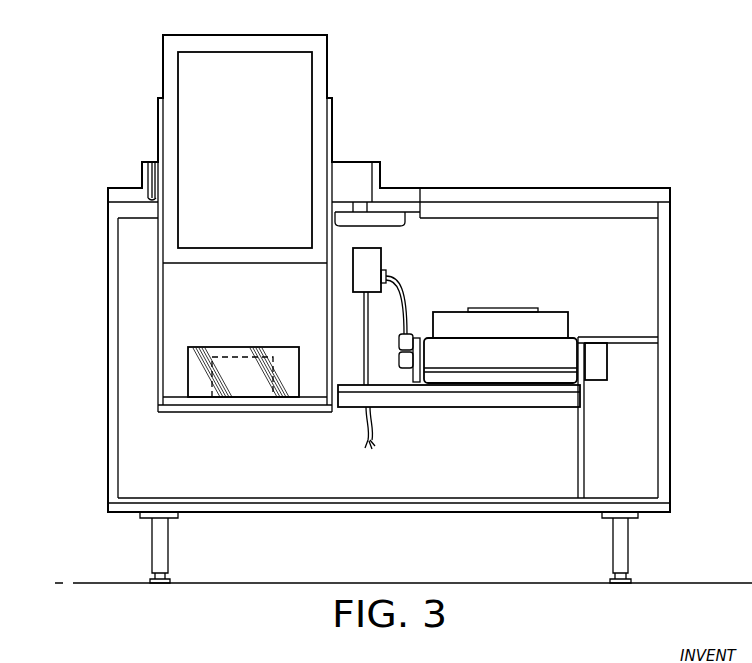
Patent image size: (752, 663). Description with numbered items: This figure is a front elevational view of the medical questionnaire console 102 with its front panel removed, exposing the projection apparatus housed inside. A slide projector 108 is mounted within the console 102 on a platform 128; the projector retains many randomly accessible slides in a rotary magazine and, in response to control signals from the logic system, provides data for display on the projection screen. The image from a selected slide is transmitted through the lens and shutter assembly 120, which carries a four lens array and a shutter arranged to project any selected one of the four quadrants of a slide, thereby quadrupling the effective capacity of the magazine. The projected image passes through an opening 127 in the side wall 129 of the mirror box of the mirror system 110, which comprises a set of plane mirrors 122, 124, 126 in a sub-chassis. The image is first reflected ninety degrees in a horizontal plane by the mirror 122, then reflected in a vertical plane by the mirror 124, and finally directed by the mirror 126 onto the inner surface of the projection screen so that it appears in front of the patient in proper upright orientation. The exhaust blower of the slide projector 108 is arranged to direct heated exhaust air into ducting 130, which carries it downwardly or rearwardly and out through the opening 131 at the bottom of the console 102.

The medical questionnaire console 102 is at (417, 158).
The slide projector 108 is at (523, 308).
The mirror system 110 is at (187, 290).
The lens and shutter assembly 120 is at (418, 378).
The plane mirror 122 is at (240, 390).
The plane mirror 124 is at (287, 383).
The plane mirror 126 is at (249, 104).
The opening 127 is at (324, 346).
The platform 128 is at (508, 388).
The side wall 129 is at (327, 303).
The ducting 130 is at (622, 337).
The opening 131 is at (598, 505).